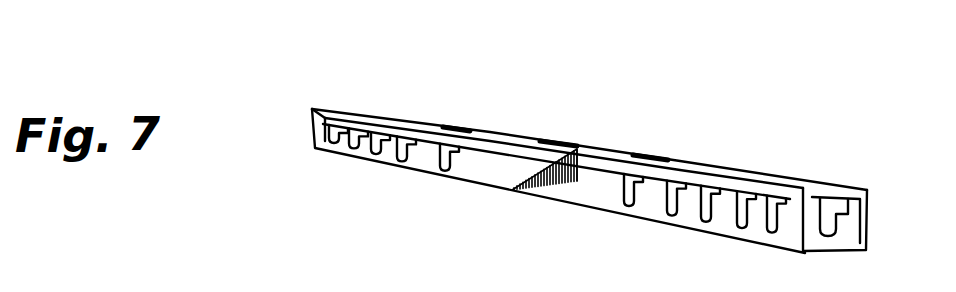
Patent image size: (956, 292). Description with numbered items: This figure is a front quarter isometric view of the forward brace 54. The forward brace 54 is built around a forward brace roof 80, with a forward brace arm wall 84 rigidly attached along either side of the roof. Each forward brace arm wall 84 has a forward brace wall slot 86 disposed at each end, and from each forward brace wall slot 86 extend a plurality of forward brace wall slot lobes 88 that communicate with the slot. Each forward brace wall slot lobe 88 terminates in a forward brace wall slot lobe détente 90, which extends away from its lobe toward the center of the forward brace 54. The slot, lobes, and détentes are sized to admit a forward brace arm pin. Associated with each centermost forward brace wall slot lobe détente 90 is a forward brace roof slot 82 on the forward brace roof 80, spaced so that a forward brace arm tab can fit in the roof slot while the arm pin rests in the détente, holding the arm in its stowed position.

The forward brace 54 is at (766, 64).
The forward brace roof 80 is at (760, 175).
The forward brace roof slot 82 is at (447, 130).
The forward brace arm wall 84 is at (502, 178).
The forward brace wall slot 86 is at (660, 187).
The forward brace wall slot lobe 88 is at (318, 136).
The forward brace wall slot lobe détente 90 is at (332, 150).